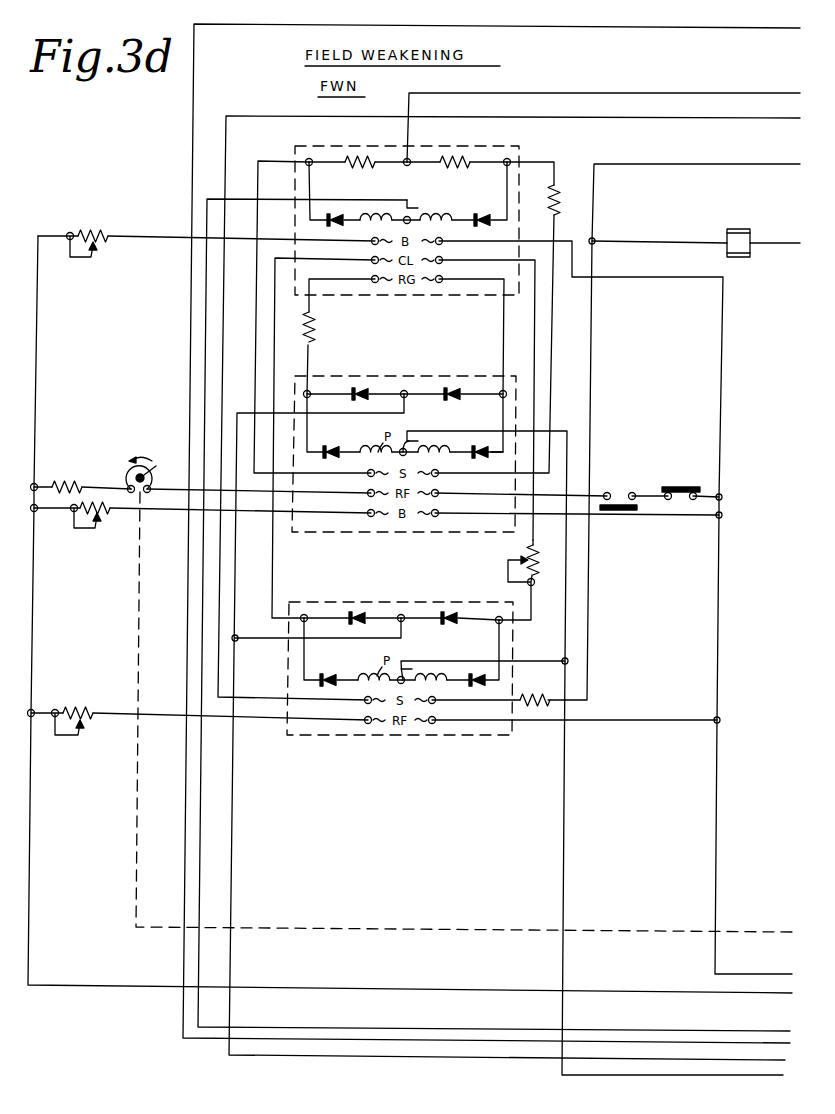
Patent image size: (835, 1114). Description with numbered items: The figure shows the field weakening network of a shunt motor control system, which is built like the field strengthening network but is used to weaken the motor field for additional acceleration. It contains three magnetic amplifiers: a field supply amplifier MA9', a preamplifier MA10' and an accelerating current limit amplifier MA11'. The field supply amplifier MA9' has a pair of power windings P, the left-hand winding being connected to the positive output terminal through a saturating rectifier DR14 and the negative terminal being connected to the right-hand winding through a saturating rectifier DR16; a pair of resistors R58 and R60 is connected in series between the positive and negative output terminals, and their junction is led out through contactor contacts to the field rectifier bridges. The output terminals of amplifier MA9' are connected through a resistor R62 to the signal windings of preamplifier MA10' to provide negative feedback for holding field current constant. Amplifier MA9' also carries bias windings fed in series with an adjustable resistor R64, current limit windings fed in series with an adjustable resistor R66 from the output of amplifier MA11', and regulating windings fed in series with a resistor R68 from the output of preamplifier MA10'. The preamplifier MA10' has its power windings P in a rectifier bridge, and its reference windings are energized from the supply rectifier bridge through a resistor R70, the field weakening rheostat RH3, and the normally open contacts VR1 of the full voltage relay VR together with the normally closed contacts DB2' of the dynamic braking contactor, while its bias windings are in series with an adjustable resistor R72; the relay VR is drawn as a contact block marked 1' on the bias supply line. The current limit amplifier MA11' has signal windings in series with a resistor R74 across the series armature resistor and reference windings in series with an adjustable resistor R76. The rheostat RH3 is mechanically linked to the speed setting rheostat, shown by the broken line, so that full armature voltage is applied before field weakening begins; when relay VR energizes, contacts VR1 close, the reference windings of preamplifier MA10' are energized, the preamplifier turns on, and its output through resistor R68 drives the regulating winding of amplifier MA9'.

The resistor R58 is at (359, 175).
The resistor R60 is at (447, 175).
The resistor R62 is at (557, 200).
The adjustable resistor R64 is at (97, 232).
The adjustable resistor R66 is at (512, 557).
The resistor R68 is at (325, 327).
The resistor R70 is at (72, 480).
The adjustable resistor R72 is at (112, 523).
The resistor R74 is at (523, 696).
The adjustable resistor R76 is at (80, 709).
The field weakening rheostat RH3 is at (124, 474).
The full voltage relay VR is at (752, 235).
The normally open contacts of full voltage relay VR1 is at (628, 480).
The normally closed contacts of dynamic braking contactor DB2' is at (675, 503).
The contact 1' is at (738, 246).
The field supply amplifier MA9' is at (407, 210).
The preamplifier MA10' is at (404, 441).
The accelerating current limit amplifier MA11' is at (400, 657).
The saturating rectifier DR14 is at (334, 227).
The saturating rectifier DR16 is at (493, 217).
The power windings P is at (408, 217).